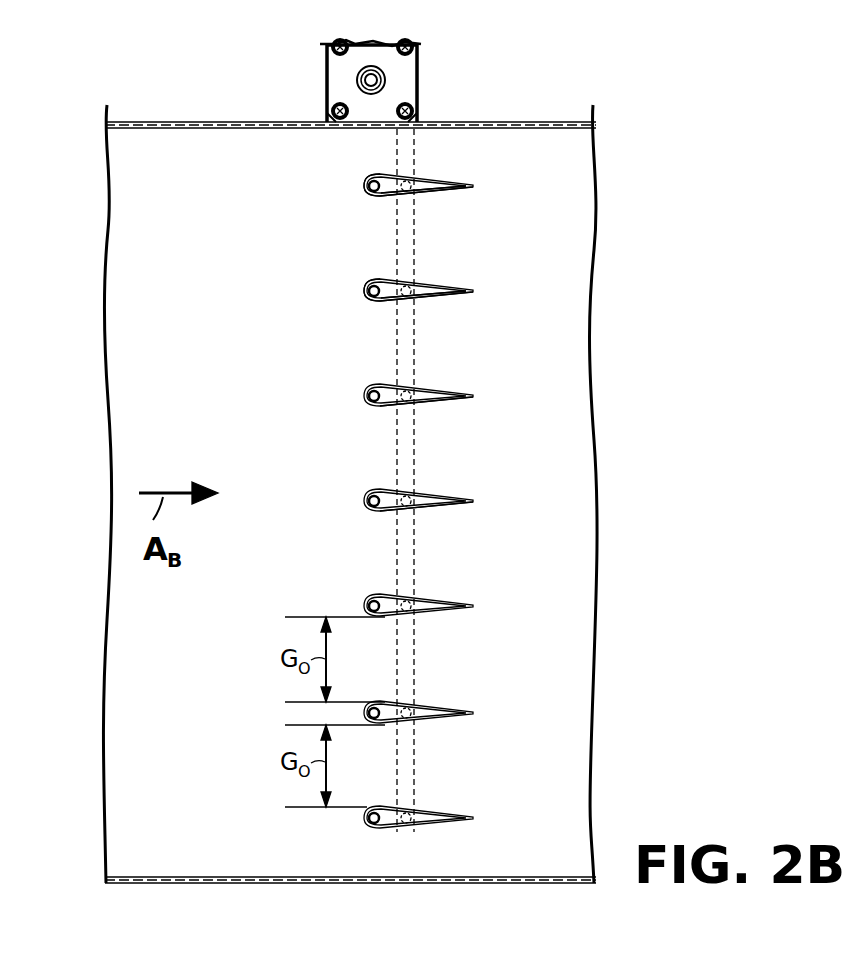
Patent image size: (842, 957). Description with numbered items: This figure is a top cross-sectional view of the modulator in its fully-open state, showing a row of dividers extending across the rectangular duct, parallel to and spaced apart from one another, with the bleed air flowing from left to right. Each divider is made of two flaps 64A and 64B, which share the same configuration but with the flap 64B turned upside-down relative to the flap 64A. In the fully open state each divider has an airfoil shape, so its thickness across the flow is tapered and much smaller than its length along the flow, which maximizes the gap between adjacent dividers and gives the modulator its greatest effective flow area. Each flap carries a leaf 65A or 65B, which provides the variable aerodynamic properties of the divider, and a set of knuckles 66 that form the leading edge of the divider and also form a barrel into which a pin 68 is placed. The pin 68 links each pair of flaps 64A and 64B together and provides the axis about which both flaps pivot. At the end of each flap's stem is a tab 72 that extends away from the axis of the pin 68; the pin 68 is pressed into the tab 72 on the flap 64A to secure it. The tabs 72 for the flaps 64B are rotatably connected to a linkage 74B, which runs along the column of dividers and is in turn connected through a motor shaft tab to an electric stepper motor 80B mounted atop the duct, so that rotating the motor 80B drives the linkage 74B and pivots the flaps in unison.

The electric stepper motor 80B is at (327, 81).
The flap 64A is at (448, 167).
The flap 64B is at (450, 206).
The knuckles 66 is at (365, 186).
The pin 68 is at (370, 196).
The leaf 65A is at (440, 387).
The leaf 65B is at (440, 403).
The tab 72 is at (380, 407).
The linkage 74B is at (398, 560).